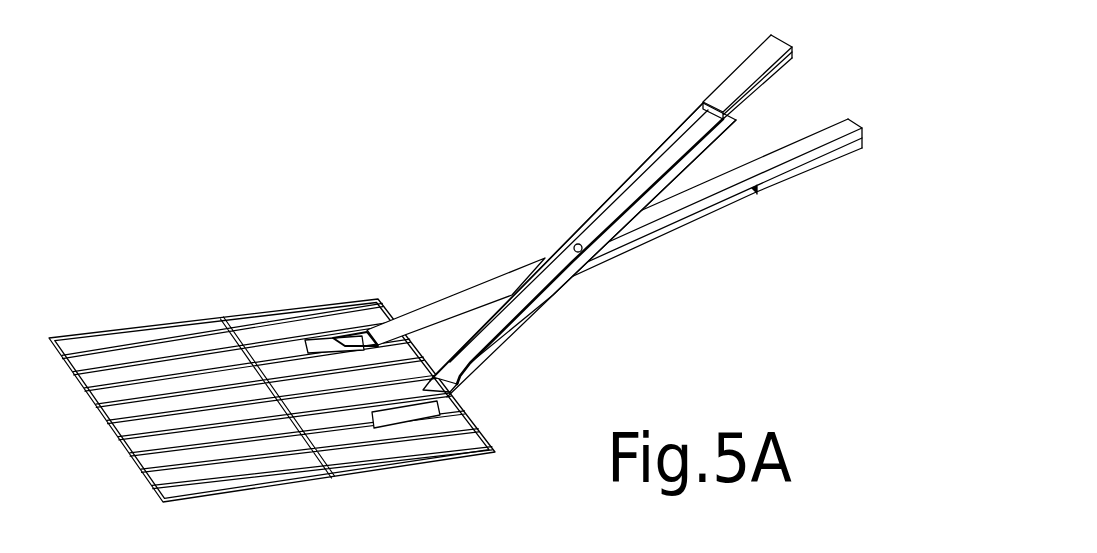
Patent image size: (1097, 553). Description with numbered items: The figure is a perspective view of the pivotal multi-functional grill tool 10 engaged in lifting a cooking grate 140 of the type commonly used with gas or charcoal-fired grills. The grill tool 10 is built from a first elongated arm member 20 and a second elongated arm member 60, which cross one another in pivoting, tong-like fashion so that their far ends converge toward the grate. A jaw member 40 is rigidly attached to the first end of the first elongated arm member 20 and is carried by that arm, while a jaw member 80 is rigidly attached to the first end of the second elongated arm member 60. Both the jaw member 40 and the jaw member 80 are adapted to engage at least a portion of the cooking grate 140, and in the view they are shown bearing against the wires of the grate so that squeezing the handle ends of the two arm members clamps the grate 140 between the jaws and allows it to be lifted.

The pivotal multi-functional grill tool 10 is at (583, 231).
The first elongated arm member 20 is at (690, 140).
The jaw member 40 is at (450, 390).
The second elongated arm member 60 is at (490, 278).
The jaw member 80 is at (328, 340).
The cooking grate 140 is at (188, 318).